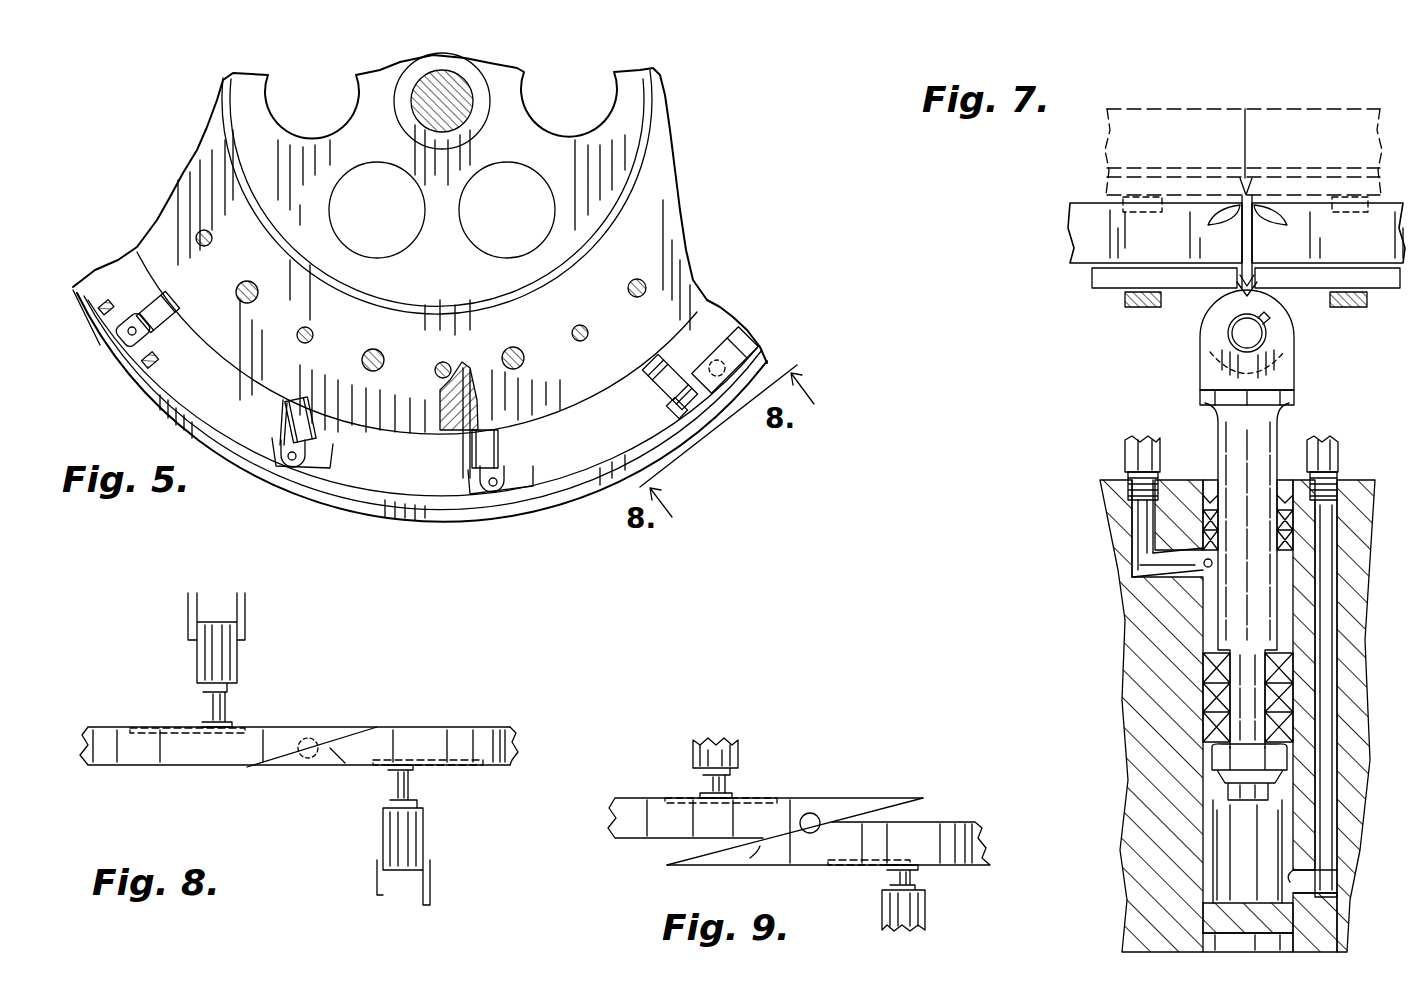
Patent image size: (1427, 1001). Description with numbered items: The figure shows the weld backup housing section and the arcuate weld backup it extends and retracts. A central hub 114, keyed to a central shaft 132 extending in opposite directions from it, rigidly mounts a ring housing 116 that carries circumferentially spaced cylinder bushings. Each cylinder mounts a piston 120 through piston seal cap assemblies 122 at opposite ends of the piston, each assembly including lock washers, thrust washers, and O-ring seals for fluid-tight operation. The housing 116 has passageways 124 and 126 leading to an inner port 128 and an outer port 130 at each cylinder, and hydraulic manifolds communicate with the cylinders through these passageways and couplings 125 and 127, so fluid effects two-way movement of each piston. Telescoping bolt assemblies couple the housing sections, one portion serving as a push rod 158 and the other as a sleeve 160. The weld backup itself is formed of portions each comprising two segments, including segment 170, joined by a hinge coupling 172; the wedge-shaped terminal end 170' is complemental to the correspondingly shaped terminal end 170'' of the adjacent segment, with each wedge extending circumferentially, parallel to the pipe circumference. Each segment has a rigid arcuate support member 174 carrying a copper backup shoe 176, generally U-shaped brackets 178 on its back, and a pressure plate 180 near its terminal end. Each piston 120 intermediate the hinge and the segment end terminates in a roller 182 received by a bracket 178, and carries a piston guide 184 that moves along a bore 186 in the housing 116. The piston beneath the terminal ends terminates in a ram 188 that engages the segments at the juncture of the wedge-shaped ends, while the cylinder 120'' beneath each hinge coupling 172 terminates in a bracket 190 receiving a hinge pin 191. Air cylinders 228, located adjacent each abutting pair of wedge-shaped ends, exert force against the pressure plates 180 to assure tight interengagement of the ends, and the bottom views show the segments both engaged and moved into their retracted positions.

In FIG. 5, the central hub 114 is at (521, 264).
In FIG. 5, the ring housing 116 is at (516, 328).
In FIG. 7, the ring housing 116 is at (1145, 733).
In FIG. 5, the piston 120 is at (491, 410).
In FIG. 7, the piston 120 is at (1229, 601).
In FIG. 5, the cylinder 120'' is at (161, 311).
In FIG. 7, the piston seal cap assembly 122 is at (1205, 505).
In FIG. 7, the passageway 124 is at (1325, 538).
In FIG. 7, the coupling 125 is at (1325, 445).
In FIG. 7, the passageway 126 is at (1142, 533).
In FIG. 7, the coupling 127 is at (1140, 442).
In FIG. 7, the inner port 128 is at (1300, 890).
In FIG. 7, the outer port 130 is at (1205, 572).
In FIG. 5, the central shaft 132 is at (465, 108).
In FIG. 5, the push rod 158 is at (213, 238).
In FIG. 5, the sleeve 160 is at (258, 290).
In FIG. 8, the segment 170 is at (299, 744).
In FIG. 9, the segment 170 is at (808, 831).
In FIG. 8, the terminal end 170' is at (323, 727).
In FIG. 9, the terminal end 170' is at (804, 816).
In FIG. 8, the terminal end 170'' is at (323, 769).
In FIG. 9, the terminal end 170'' is at (732, 867).
In FIG. 7, the hinge coupling 172 is at (1225, 292).
In FIG. 5, the arcuate support member 174 is at (382, 497).
In FIG. 7, the arcuate support member 174 is at (1283, 178).
In FIG. 5, the copper backup shoe 176 is at (436, 507).
In FIG. 7, the copper backup shoe 176 is at (1275, 140).
In FIG. 5, the U-shaped bracket 178 is at (334, 462).
In FIG. 5, the pressure plate 180 is at (727, 350).
In FIG. 8, the pressure plate 180 is at (171, 728).
In FIG. 9, the pressure plate 180 is at (745, 800).
In FIG. 5, the roller 182 is at (292, 468).
In FIG. 5, the piston guide 184 is at (281, 404).
In FIG. 5, the bore 186 is at (472, 378).
In FIG. 5, the ram 188 is at (670, 411).
In FIG. 8, the ram 188 is at (305, 737).
In FIG. 9, the ram 188 is at (815, 812).
In FIG. 5, the bracket 190 is at (140, 302).
In FIG. 7, the bracket 190 is at (1283, 380).
In FIG. 5, the hinge pin 191 is at (136, 334).
In FIG. 7, the hinge pin 191 is at (1250, 333).
In FIG. 8, the air cylinder 228 is at (220, 658).
In FIG. 9, the air cylinder 228 is at (722, 758).